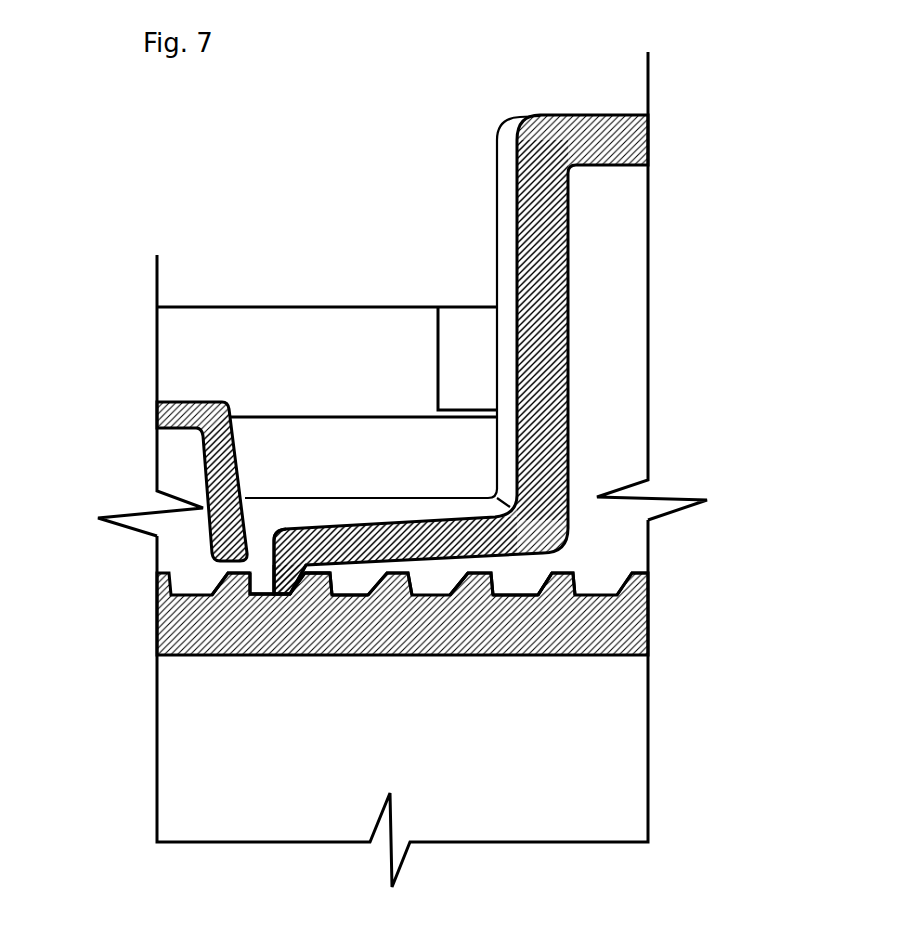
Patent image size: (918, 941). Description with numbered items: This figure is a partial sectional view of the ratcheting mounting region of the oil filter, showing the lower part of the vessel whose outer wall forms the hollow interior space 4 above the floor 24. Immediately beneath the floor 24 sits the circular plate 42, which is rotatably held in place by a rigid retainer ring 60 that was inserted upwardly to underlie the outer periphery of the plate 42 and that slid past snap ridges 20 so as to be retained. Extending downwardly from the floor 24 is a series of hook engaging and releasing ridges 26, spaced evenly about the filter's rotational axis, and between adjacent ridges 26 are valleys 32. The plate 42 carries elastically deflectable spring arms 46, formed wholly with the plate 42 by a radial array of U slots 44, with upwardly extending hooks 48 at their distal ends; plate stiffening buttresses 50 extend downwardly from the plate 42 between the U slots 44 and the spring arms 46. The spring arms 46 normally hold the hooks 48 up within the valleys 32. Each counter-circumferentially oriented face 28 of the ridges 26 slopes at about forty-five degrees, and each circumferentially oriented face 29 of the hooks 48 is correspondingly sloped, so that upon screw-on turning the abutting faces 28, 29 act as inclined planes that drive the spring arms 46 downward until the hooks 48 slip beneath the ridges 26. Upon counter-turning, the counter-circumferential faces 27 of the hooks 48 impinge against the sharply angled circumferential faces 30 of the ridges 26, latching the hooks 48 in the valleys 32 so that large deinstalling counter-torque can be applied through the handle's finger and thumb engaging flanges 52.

The hollow interior space 4 is at (612, 770).
The snap ridges 20 is at (481, 333).
The floor 24 is at (623, 642).
The hook engaging and releasing ridges 26 is at (332, 588).
The counter-circumferential faces of hooks 27 is at (258, 588).
The counter-circumferentially oriented faces of ridges 28 is at (313, 588).
The circumferentially oriented faces of hooks 29 is at (282, 533).
The circumferential faces of ridges 30 is at (493, 580).
The valleys 32 is at (263, 597).
The circular plate 42 is at (432, 497).
The U slots 44 is at (330, 513).
The spring arms 46 is at (408, 540).
The hooks 48 is at (267, 590).
The plate stiffening buttresses 50 is at (165, 410).
The finger and thumb engaging flanges 52 is at (548, 312).
The retainer ring 60 is at (243, 430).